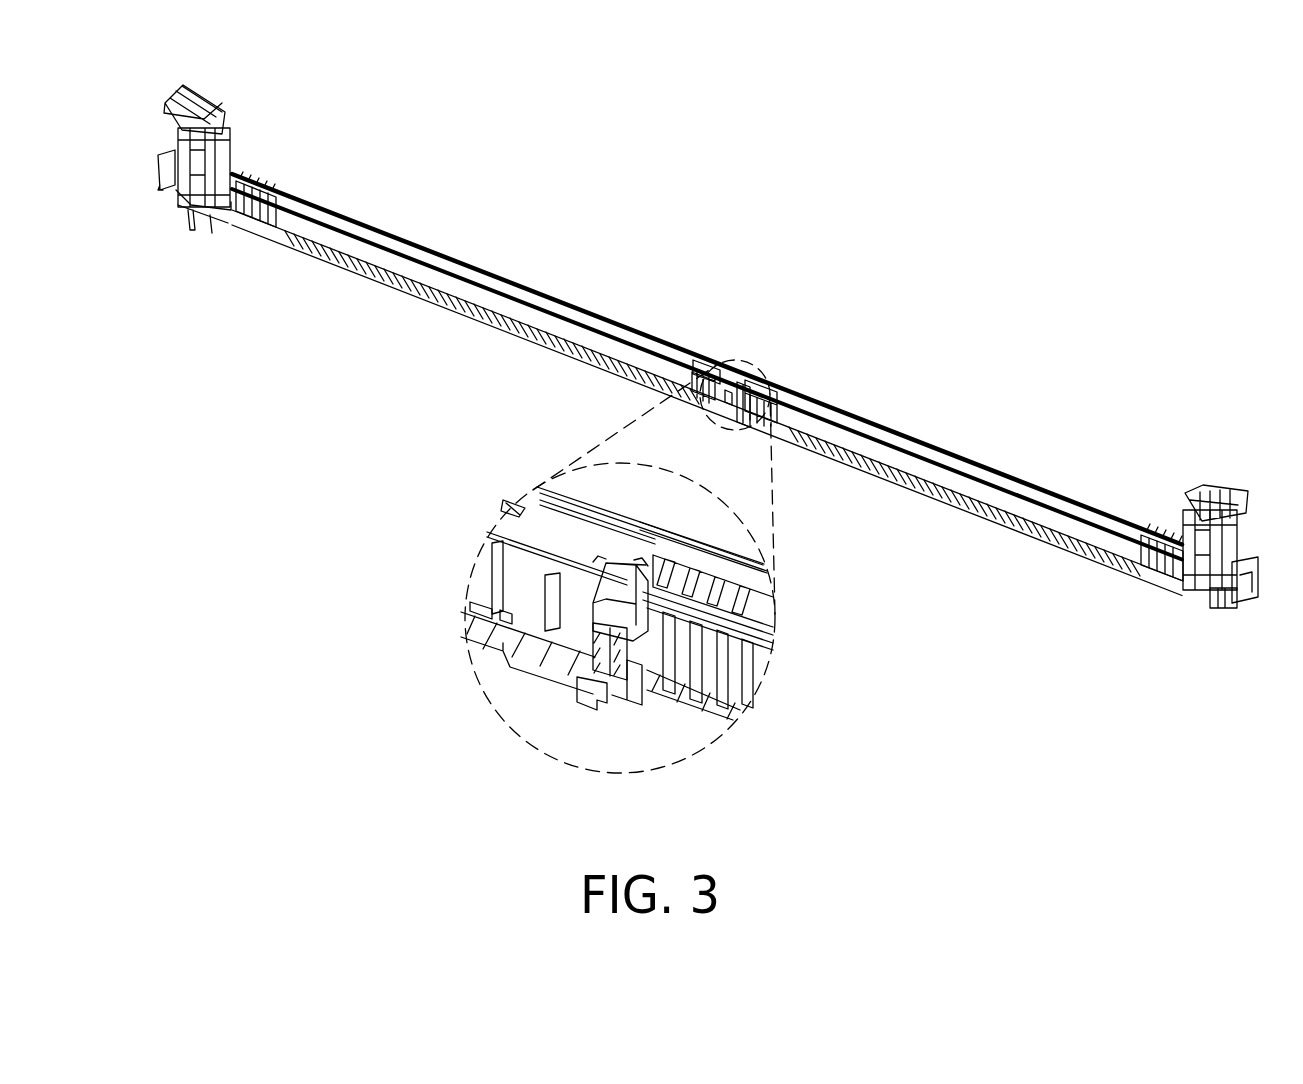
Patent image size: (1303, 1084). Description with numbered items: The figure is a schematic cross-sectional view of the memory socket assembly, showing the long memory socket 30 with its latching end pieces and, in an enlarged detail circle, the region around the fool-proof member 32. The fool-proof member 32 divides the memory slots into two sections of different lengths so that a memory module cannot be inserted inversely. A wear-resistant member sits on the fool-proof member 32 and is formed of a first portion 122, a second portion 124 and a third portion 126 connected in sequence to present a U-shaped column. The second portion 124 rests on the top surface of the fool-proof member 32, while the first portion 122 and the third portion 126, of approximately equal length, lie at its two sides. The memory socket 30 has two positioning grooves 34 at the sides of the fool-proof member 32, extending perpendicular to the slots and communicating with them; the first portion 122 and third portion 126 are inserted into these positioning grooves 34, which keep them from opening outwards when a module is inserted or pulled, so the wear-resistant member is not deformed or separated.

The memory socket 30 is at (955, 397).
The fool-proof member 32 is at (617, 657).
The positioning grooves 34 is at (605, 556).
The first portion 122 is at (597, 640).
The second portion 124 is at (622, 587).
The third portion 126 is at (644, 668).